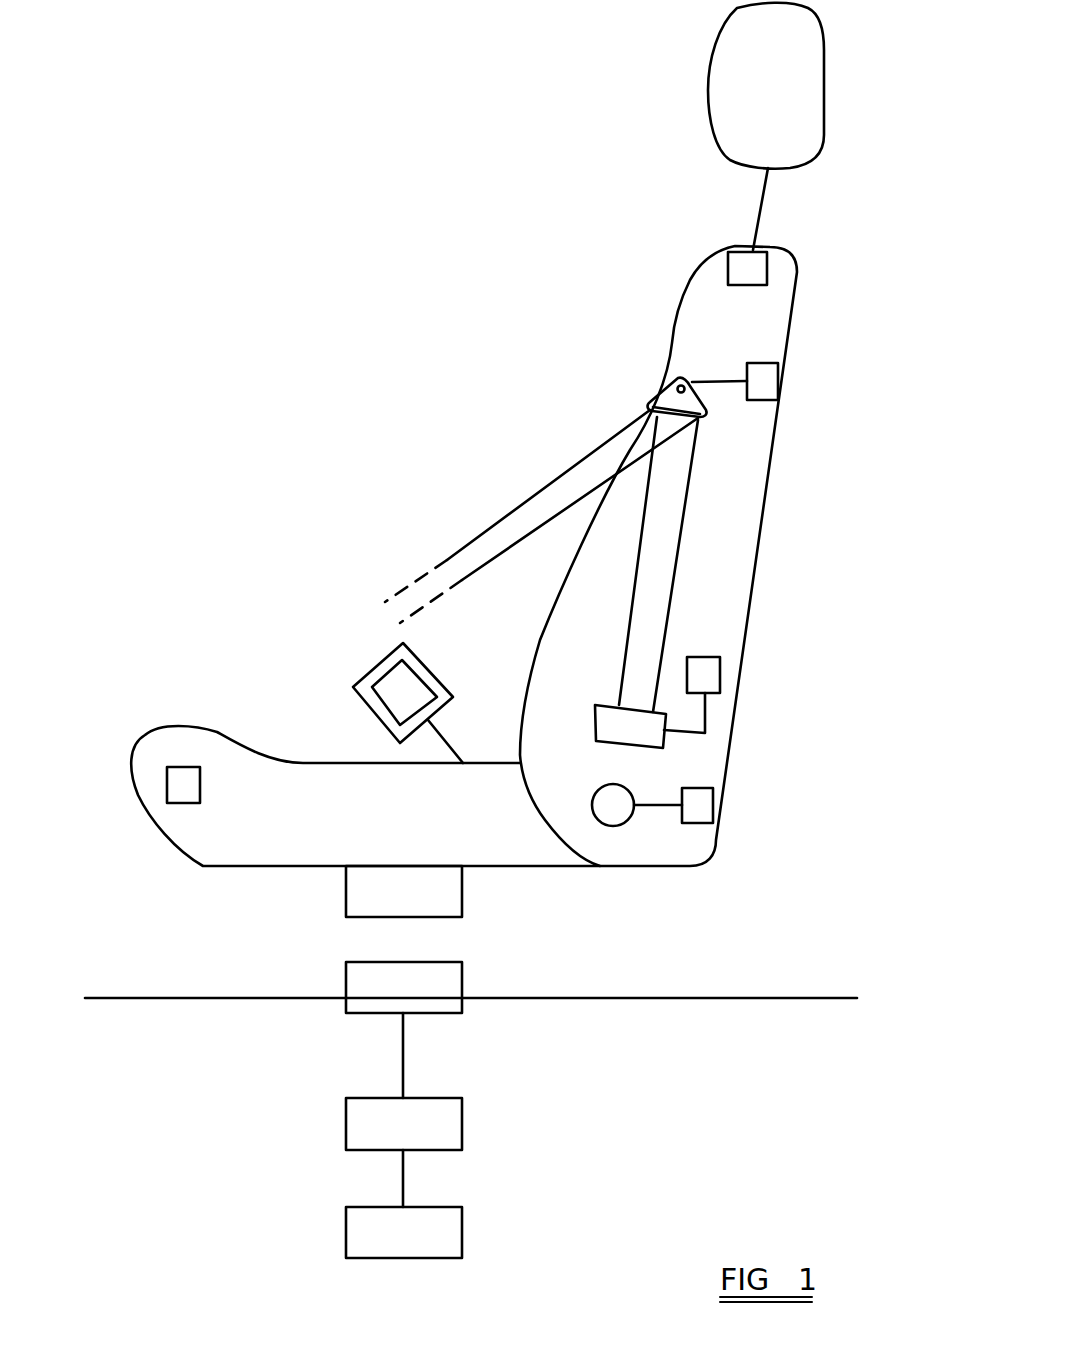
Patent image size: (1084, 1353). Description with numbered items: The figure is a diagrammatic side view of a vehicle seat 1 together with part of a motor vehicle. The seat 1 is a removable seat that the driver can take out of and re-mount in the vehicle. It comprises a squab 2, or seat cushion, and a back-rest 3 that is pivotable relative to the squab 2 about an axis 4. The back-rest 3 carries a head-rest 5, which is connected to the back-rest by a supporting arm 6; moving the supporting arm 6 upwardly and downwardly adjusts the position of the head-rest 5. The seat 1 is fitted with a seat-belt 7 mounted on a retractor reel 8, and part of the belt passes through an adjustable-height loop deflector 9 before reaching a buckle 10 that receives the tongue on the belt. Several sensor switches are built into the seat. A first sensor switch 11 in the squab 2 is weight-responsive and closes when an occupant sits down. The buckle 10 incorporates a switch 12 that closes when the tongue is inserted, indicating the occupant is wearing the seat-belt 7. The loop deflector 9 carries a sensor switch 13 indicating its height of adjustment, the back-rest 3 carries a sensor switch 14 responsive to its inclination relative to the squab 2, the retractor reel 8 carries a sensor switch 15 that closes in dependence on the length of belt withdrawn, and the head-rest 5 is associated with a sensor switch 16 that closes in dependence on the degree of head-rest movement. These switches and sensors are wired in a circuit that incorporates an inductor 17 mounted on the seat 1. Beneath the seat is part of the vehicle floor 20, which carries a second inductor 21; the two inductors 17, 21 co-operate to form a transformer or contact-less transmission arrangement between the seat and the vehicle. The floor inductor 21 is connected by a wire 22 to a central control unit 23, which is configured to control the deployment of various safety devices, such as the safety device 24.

The vehicle seat 1 is at (222, 349).
The squab 2 is at (258, 757).
The back-rest 3 is at (732, 607).
The axis 4 is at (614, 812).
The head-rest 5 is at (825, 87).
The supporting arm 6 is at (762, 208).
The seat-belt 7 is at (675, 503).
The retractor reel 8 is at (628, 735).
The adjustable-height loop deflector 9 is at (657, 398).
The buckle 10 is at (440, 675).
The first sensor switch 11 is at (167, 789).
The switch 12 is at (383, 717).
The sensor switch 13 is at (778, 381).
The sensor switch 14 is at (713, 805).
The sensor switch 15 is at (720, 687).
The sensor switch 16 is at (760, 285).
The inductor 17 is at (362, 890).
The floor 20 is at (745, 1000).
The inductor 21 is at (437, 973).
The wire 22 is at (403, 1065).
The central control unit 23 is at (452, 1123).
The safety device 24 is at (448, 1225).